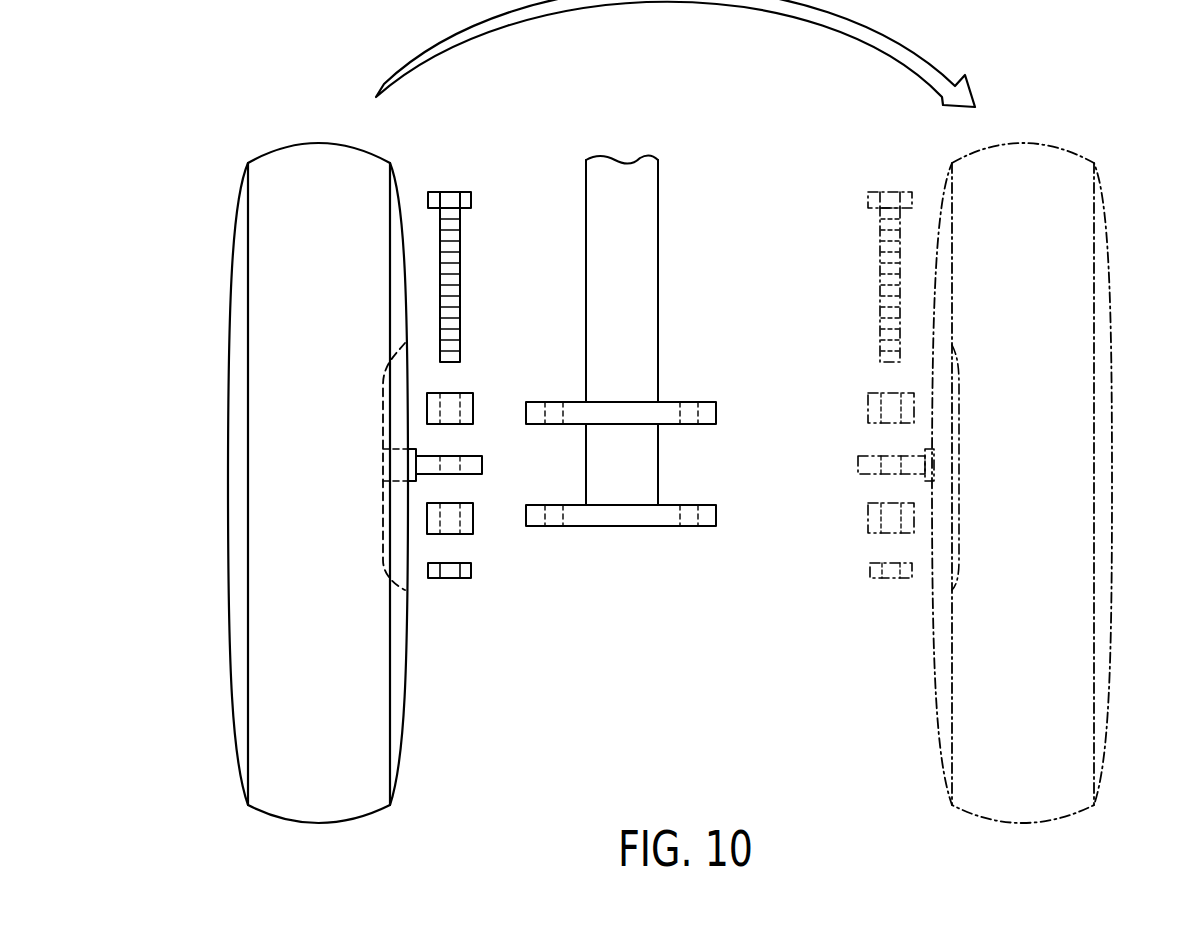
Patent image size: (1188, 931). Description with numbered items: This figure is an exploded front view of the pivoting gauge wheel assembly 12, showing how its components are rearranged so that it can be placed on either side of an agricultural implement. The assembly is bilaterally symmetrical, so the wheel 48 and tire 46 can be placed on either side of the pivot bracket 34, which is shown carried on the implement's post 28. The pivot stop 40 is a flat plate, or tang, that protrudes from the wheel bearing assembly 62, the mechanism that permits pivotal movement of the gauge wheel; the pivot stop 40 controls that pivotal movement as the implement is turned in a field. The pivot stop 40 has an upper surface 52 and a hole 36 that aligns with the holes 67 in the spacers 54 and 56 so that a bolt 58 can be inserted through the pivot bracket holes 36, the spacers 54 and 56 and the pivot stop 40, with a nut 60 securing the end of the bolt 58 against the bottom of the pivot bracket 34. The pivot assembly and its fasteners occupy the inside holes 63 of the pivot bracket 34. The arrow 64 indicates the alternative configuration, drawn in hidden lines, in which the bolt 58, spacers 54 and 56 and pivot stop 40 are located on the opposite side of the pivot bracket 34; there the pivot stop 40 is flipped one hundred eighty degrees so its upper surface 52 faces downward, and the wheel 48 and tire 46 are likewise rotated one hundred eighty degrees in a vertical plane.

The gauge wheel assembly 12 is at (545, 612).
The leg post 28 is at (650, 338).
The pivot bracket 34 is at (716, 406).
The hole 36 is at (690, 426).
The pivot stop 40 is at (482, 465).
The tire 46 is at (255, 403).
The wheel 48 is at (383, 405).
The upper surface 52 is at (428, 455).
The spacer 54 is at (471, 410).
The spacer 56 is at (470, 518).
The bolt 58 is at (452, 192).
The nut 60 is at (452, 580).
The wheel bearing assembly 62 is at (383, 462).
The inside holes 63 is at (548, 402).
The arrow 64 is at (667, 4).
The holes 67 is at (448, 393).